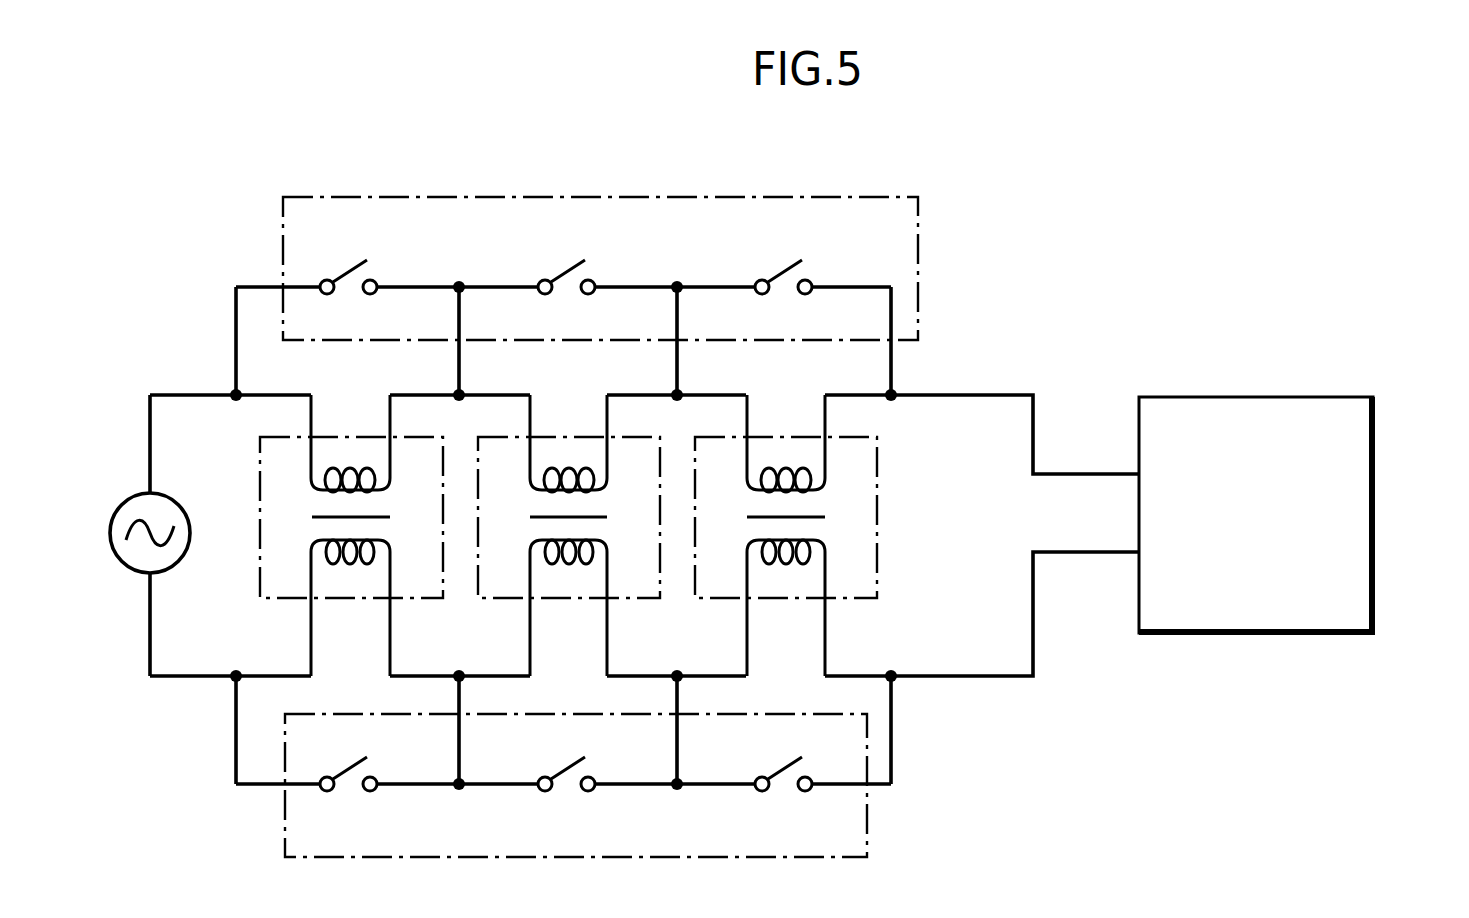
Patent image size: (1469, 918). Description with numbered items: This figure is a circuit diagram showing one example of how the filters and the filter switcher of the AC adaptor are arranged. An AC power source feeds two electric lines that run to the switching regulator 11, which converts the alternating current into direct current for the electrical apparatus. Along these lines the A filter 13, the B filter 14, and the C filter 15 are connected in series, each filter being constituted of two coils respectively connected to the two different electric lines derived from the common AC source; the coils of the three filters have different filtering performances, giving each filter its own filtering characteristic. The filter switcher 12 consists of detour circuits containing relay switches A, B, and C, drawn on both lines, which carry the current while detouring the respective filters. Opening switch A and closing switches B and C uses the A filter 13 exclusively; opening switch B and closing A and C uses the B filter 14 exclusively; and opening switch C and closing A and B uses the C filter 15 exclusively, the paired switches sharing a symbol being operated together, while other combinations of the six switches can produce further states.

The switching regulator 11 is at (1373, 510).
The filter switcher 12 is at (918, 207).
The A filter 13 is at (412, 598).
The B filter 14 is at (630, 598).
The C filter 15 is at (847, 598).